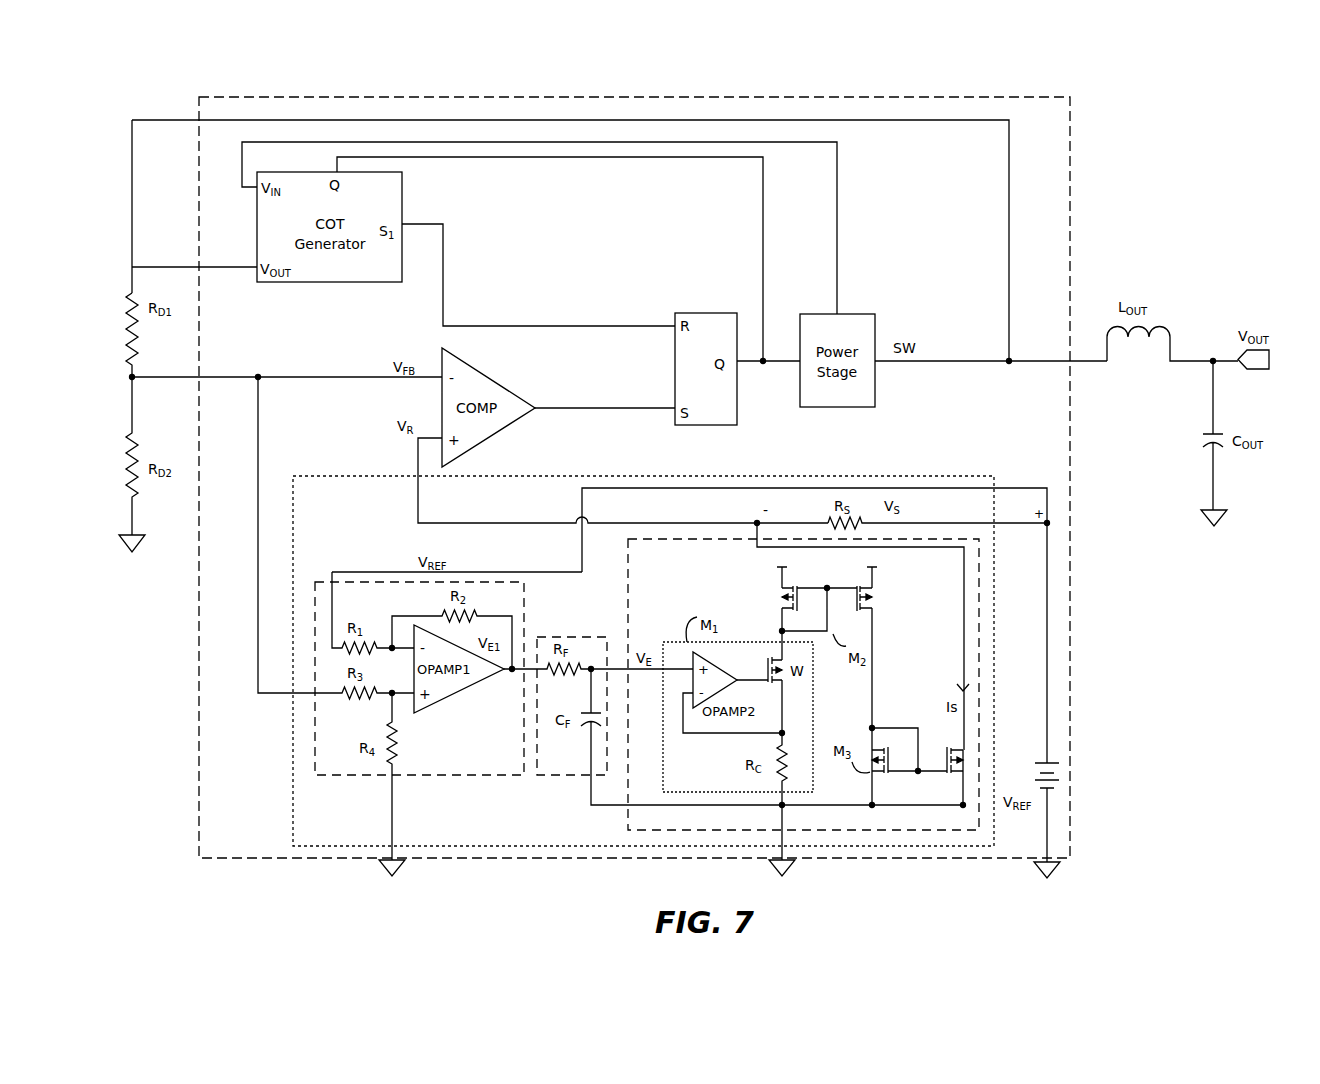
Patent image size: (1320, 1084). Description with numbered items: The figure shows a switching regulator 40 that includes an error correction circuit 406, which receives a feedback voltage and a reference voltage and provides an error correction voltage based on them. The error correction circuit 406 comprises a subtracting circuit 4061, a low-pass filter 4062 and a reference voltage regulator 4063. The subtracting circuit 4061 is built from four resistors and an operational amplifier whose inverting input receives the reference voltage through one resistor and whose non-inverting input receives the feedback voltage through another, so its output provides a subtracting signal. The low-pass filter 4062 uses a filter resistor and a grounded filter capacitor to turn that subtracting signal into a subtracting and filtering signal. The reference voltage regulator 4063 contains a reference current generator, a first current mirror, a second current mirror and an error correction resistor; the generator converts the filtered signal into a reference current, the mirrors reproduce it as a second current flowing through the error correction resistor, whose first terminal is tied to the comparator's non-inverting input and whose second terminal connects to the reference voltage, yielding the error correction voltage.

The switching regulator 40 is at (1070, 154).
The error correction circuit 406 is at (1028, 585).
The subtracting circuit 4061 is at (316, 582).
The low-pass filter 4062 is at (540, 637).
The reference voltage regulator 4063 is at (835, 832).